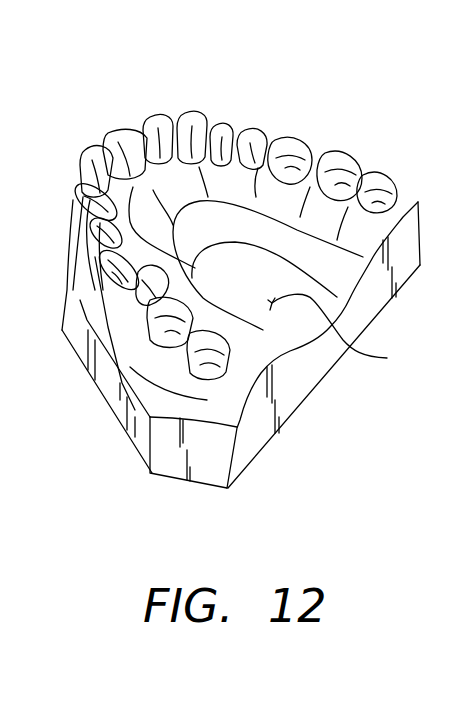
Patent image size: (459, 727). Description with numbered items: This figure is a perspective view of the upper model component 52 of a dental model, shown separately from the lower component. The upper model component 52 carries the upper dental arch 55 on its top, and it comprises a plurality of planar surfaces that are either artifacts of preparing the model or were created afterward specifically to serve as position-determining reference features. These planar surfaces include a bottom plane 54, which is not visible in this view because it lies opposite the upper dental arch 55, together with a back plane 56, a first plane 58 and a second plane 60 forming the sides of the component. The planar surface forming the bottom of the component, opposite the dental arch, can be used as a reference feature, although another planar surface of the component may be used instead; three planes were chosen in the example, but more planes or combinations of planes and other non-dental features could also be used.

The upper model component 52 is at (262, 128).
The bottom plane 54 is at (203, 494).
The upper dental arch 55 is at (345, 333).
The back plane 56 is at (291, 379).
The first plane 58 is at (148, 436).
The second plane 60 is at (410, 200).